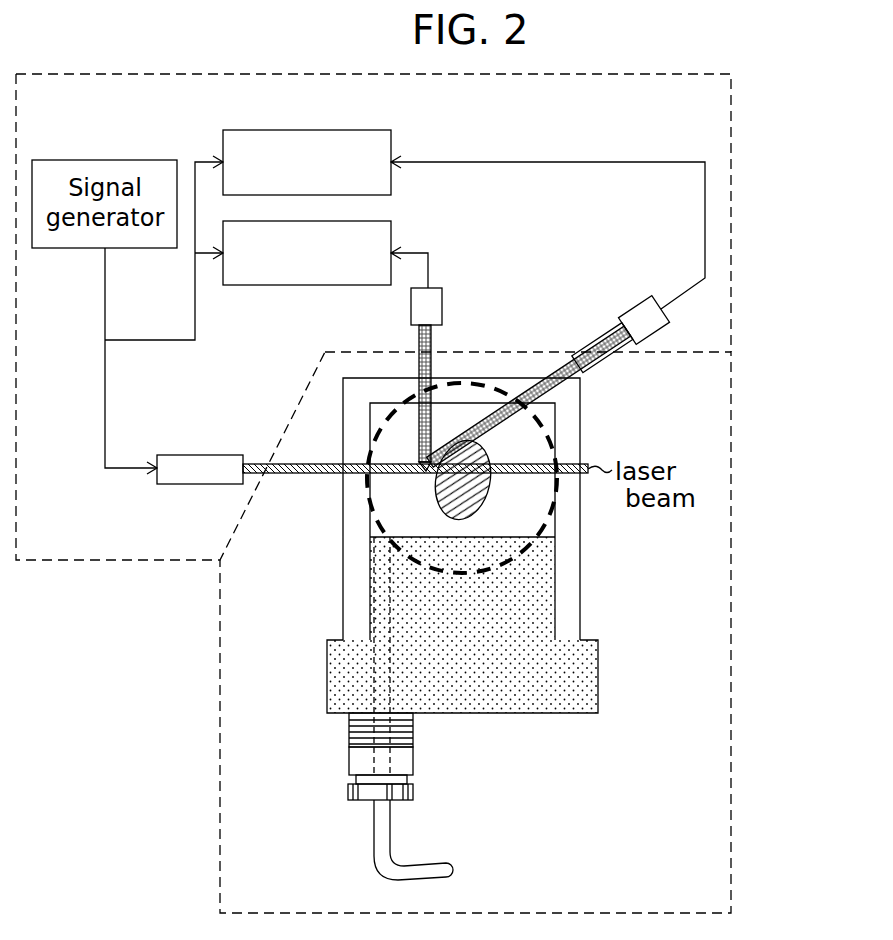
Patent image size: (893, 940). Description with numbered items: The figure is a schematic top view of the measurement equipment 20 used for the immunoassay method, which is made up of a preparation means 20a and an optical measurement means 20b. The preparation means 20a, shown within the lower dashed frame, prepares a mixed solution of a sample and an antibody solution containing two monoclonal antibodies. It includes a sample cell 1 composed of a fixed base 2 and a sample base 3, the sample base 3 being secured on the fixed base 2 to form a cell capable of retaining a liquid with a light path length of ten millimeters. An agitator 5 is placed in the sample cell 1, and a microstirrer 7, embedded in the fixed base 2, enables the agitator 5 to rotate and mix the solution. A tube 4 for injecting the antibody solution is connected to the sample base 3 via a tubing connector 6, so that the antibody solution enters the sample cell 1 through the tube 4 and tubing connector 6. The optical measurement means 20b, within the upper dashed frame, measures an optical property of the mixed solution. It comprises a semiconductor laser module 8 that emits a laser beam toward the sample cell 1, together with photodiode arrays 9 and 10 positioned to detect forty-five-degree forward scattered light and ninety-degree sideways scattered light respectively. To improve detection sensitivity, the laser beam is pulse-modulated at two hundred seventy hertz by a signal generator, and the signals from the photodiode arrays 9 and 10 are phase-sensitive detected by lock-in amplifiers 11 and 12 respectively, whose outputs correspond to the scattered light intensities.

The sample cell 1 is at (418, 545).
The fixed base 2 is at (356, 610).
The sample base 3 is at (439, 676).
The tube 4 is at (374, 834).
The agitator 5 is at (483, 447).
The tubing connector 6 is at (349, 756).
The microstirrer 7 is at (372, 520).
The semiconductor laser module 8 is at (203, 455).
The photodiode array 9 is at (637, 300).
The photodiode array 10 is at (442, 307).
The lock-in amplifier 11 is at (307, 130).
The lock-in amplifier 12 is at (307, 285).
The measurement equipment 20 is at (448, 493).
The preparation means 20a is at (521, 632).
The optical measurement means 20b is at (733, 243).